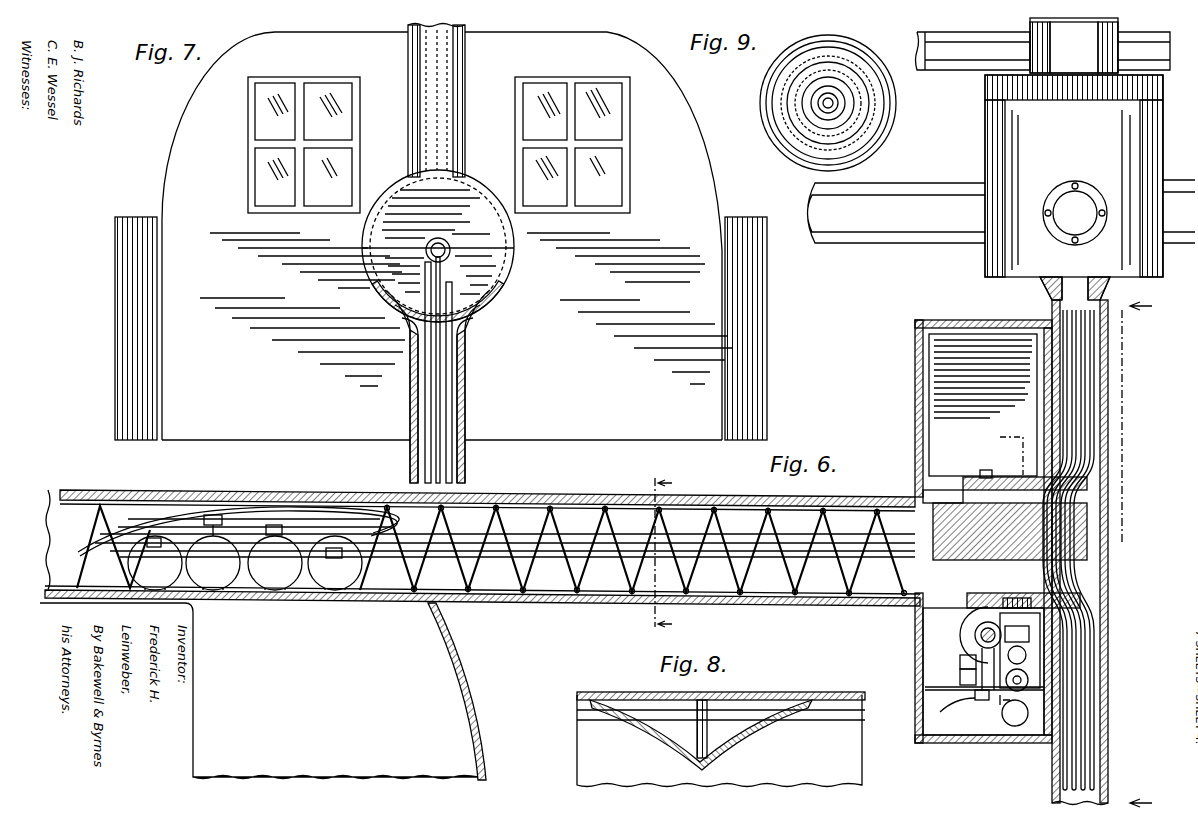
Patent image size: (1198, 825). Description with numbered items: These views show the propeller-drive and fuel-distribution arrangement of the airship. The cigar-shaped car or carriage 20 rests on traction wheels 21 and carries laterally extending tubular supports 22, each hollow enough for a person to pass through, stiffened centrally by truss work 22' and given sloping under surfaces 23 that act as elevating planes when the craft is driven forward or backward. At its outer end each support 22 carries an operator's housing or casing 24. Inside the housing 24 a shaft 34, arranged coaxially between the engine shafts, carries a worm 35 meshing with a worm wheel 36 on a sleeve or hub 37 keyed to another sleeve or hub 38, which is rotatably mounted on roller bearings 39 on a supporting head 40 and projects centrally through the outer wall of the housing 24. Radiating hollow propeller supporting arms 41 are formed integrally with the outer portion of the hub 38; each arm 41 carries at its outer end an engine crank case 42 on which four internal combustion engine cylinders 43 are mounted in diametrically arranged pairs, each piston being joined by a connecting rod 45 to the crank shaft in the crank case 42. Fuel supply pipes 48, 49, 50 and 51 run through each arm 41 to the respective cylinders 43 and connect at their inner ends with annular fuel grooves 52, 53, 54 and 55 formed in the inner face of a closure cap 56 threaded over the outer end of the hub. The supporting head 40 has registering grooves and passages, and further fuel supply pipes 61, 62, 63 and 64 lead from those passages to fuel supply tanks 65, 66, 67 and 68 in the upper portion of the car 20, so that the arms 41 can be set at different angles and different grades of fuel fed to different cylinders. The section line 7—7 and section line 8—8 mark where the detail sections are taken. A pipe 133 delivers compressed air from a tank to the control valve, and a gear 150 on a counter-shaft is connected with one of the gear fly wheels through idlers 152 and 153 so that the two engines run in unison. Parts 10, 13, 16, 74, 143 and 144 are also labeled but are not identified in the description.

In FIG. 6, the section line 7— 7 is at (1144, 556).
In FIG. 6, the section line 8— 8 is at (657, 555).
In FIG. 6, the casing 10 is at (1032, 705).
In FIG. 6, the switch 13 is at (1022, 652).
In FIG. 6, the contact block 16 is at (1017, 627).
In FIG. 8, the car or carriage 20 is at (721, 741).
In FIG. 6, the car or carriage 20 is at (481, 670).
In FIG. 7, the traction wheels 21 is at (212, 98).
In FIG. 8, the tubular supports or carriers 22 is at (721, 689).
In FIG. 6, the tubular supports or carriers 22 is at (487, 490).
In FIG. 8, the truss work 22' is at (690, 729).
In FIG. 6, the truss work 22' is at (492, 551).
In FIG. 7, the sloping under surfaces 23 is at (117, 246).
In FIG. 8, the sloping under surfaces 23 is at (672, 730).
In FIG. 6, the operator's housing or casing 24 is at (935, 378).
In FIG. 6, the shaft 34 is at (980, 650).
In FIG. 6, the worm 35 is at (975, 634).
In FIG. 6, the worm wheel 36 is at (984, 470).
In FIG. 6, the sleeve or hub 37 is at (1014, 478).
In FIG. 6, the sleeve or hub 38 is at (972, 480).
In FIG. 6, the roller bearings 39 is at (963, 500).
In FIG. 6, the supporting head 40 is at (940, 522).
In FIG. 7, the propeller supporting arms 41 is at (466, 72).
In FIG. 6, the propeller supporting arms 41 is at (1108, 389).
In FIG. 6, the engine crank case 42 is at (1074, 176).
In FIG. 6, the internal combustion engine cylinders 43 is at (1002, 211).
In FIG. 6, the connecting rod 45 is at (1070, 246).
In FIG. 7, the fuel supply pipe 48 is at (424, 372).
In FIG. 6, the fuel supply pipe 48 is at (1068, 342).
In FIG. 7, the fuel supply pipe 49 is at (470, 340).
In FIG. 6, the fuel supply pipe 49 is at (1077, 349).
In FIG. 7, the fuel supply pipe 50 is at (384, 296).
In FIG. 6, the fuel supply pipe 50 is at (1086, 355).
In FIG. 7, the fuel supply pipe 51 is at (470, 300).
In FIG. 6, the fuel supply pipe 51 is at (1095, 362).
In FIG. 9, the annular fuel channel or groove 52 is at (872, 97).
In FIG. 9, the annular fuel channel or groove 53 is at (862, 106).
In FIG. 9, the annular fuel channel or groove 54 is at (842, 118).
In FIG. 9, the annular fuel channel or groove 55 is at (818, 128).
In FIG. 7, the closure cap 56 is at (452, 262).
In FIG. 9, the closure cap 56 is at (848, 112).
In FIG. 6, the fuel supply pipe 61 is at (856, 536).
In FIG. 6, the fuel supply pipe 62 is at (798, 542).
In FIG. 6, the fuel supply pipe 63 is at (815, 552).
In FIG. 6, the fuel supply pipe 64 is at (869, 557).
In FIG. 6, the fuel supply tank 65 is at (213, 552).
In FIG. 6, the fuel supply tank 66 is at (275, 557).
In FIG. 6, the fuel supply tank 67 is at (155, 563).
In FIG. 6, the fuel supply tank 68 is at (335, 563).
In FIG. 6, the pipe 74 is at (1028, 56).
In FIG. 6, the pipe 133 is at (990, 700).
In FIG. 6, the roller 143 is at (1015, 713).
In FIG. 6, the link 144 is at (957, 712).
In FIG. 6, the gear 150 is at (994, 712).
In FIG. 6, the idler 152 is at (953, 661).
In FIG. 6, the idler 153 is at (953, 677).